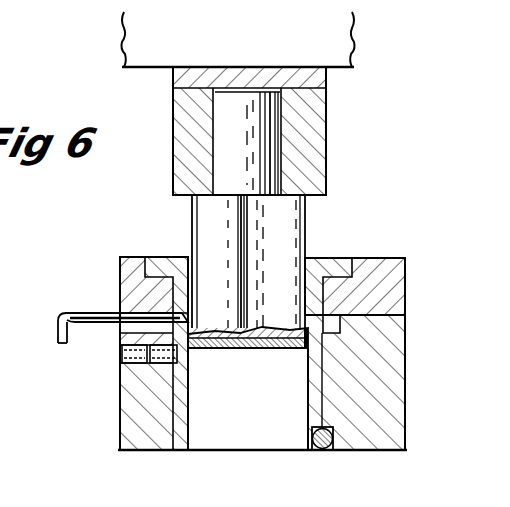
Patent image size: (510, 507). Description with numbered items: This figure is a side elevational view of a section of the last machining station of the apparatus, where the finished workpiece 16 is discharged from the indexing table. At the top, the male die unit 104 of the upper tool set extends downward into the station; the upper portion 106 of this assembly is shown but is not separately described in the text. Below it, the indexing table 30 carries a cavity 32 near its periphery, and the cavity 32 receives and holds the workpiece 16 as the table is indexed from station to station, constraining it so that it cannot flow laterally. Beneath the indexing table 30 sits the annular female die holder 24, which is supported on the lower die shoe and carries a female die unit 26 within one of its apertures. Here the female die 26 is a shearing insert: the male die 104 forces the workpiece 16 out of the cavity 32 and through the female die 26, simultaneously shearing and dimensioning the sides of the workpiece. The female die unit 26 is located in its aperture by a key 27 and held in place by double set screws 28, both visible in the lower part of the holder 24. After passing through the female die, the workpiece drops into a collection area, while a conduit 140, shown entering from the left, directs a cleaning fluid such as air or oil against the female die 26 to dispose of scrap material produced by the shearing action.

The workpiece 16 is at (227, 349).
The female die holder 24 is at (371, 436).
The female die unit 26 is at (186, 428).
The key 27 is at (322, 451).
The double set screws 28 is at (152, 366).
The indexing table 30 is at (376, 258).
The cavity 32 is at (325, 290).
The male die unit 104 is at (197, 226).
The head block 106 is at (327, 133).
The conduit 140 is at (93, 313).